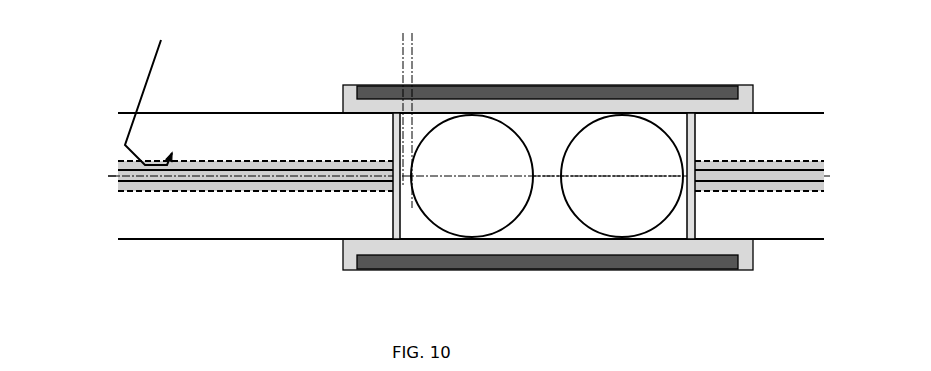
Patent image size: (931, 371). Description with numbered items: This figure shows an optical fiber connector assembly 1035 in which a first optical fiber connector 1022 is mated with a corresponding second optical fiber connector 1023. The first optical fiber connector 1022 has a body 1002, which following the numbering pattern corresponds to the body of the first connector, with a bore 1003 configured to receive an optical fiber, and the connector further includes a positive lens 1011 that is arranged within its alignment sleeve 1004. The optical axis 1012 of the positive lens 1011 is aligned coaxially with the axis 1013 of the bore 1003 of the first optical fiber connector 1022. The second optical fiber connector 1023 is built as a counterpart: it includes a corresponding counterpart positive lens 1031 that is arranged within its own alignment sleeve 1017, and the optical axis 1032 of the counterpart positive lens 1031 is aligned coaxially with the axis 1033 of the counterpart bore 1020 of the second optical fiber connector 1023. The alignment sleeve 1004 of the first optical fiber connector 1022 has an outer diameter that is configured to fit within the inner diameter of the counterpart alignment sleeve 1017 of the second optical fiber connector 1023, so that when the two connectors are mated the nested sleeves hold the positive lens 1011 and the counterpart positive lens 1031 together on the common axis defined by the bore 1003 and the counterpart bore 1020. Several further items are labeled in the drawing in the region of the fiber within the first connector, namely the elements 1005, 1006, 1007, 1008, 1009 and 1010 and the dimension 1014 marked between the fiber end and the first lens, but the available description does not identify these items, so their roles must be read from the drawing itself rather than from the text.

The tube 1002 is at (131, 219).
The bore 1003 is at (195, 202).
The alignment sleeve 1004 is at (480, 248).
The optical fiber 1005 is at (430, 245).
The partition / fiber end 1006 is at (440, 128).
The fiber core 1007 is at (252, 178).
The fiber cladding 1008 is at (305, 183).
The fiber coating 1009 is at (352, 193).
The light beam 1010 is at (168, 94).
The positive lens 1011 is at (473, 150).
The optical axis 1012 is at (542, 175).
The axis 1013 is at (110, 173).
The gap distance 1014 is at (445, 50).
The alignment sleeve 1017 is at (602, 258).
The counterpart bore 1020 is at (822, 200).
The first optical fiber connector 1022 is at (273, 110).
The second optical fiber connector 1023 is at (768, 112).
The counterpart positive lens 1031 is at (623, 155).
The optical axis 1032 is at (647, 175).
The axis 1033 is at (793, 174).
The optical fiber connector assembly 1035 is at (248, 88).